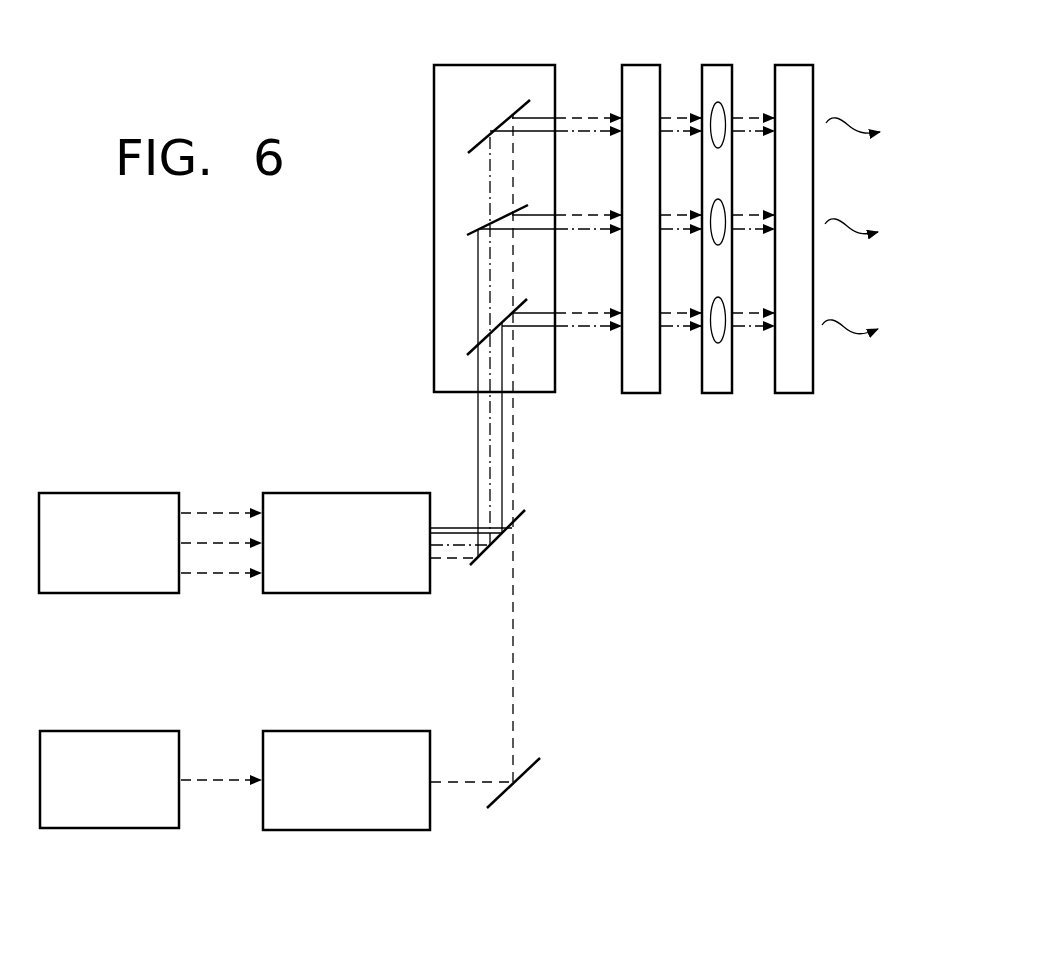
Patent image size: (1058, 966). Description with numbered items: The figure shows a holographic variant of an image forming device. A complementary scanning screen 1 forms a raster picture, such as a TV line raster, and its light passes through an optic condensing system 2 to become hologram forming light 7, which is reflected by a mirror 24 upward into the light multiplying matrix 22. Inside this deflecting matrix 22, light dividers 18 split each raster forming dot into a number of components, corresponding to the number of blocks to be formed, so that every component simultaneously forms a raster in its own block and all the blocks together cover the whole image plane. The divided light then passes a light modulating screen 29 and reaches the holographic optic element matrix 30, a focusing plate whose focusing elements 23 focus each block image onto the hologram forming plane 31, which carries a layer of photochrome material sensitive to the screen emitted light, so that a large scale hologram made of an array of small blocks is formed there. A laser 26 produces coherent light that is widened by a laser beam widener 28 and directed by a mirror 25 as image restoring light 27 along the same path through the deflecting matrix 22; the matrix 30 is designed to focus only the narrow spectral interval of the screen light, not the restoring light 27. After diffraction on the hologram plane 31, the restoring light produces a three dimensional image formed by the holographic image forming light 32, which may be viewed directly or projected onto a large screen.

The complementary scanning screen 1 is at (94, 493).
The optic condensing system 2 is at (333, 493).
The hologram forming light 7 is at (445, 528).
The light dividers 18 is at (497, 125).
The light multiplying matrix 22 is at (445, 243).
The focusing elements 23 is at (722, 110).
The mirror 24 is at (492, 550).
The mirror 25 is at (530, 770).
The laser 26 is at (108, 733).
The image restoring light 27 is at (515, 625).
The laser beam widener 28 is at (356, 733).
The light modulating screen 29 is at (633, 380).
The holographic optic element matrix 30 is at (723, 382).
The hologram forming plane 31 is at (798, 380).
The holographic image forming light 32 is at (849, 112).